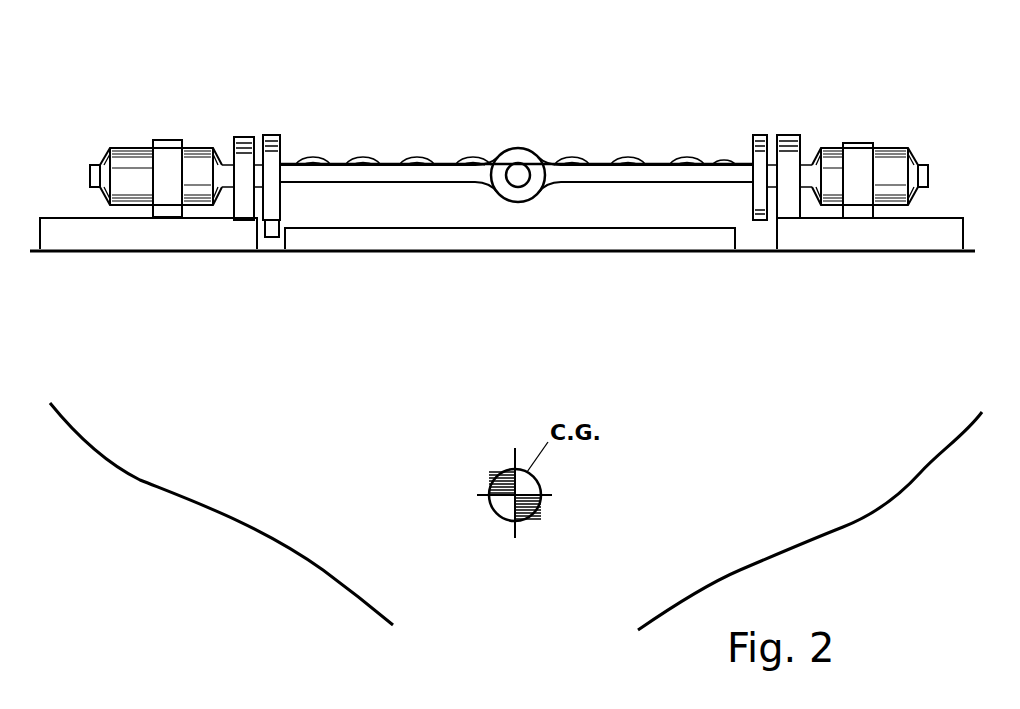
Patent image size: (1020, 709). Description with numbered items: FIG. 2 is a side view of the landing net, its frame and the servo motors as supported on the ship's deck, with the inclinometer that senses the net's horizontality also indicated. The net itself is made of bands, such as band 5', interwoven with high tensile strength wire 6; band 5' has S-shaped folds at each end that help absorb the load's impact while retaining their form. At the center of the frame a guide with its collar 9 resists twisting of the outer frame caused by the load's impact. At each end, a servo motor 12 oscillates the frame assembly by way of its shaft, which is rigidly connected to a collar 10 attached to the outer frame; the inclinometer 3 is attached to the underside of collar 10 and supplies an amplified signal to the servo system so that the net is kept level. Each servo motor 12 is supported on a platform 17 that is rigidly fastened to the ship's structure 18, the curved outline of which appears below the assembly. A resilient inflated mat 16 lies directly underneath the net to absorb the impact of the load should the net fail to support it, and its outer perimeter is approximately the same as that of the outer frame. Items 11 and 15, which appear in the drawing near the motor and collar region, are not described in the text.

The inclinometer 3 is at (273, 238).
The band 5' is at (516, 122).
The high tensile strength wire 6 is at (625, 157).
The collar 9 is at (515, 148).
The collar 10 is at (272, 134).
The disc 11 is at (246, 136).
The servo motor 12 is at (884, 143).
The left motor 15 is at (168, 139).
The resilient inflated mat 16 is at (588, 228).
The platform 17 is at (72, 217).
The ship's structure 18 is at (843, 528).